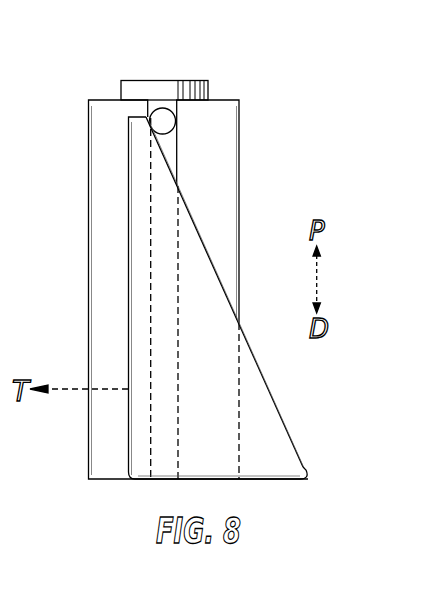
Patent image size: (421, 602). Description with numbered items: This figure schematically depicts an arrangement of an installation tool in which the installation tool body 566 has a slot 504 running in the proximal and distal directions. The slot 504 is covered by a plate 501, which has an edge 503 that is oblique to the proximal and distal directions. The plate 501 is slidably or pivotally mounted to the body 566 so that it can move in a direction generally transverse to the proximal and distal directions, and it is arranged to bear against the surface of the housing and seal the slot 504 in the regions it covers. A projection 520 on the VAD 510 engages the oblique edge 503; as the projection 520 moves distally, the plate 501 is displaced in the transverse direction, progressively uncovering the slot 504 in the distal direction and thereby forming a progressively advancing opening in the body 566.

The VAD 510 is at (145, 80).
The projection 520 is at (162, 108).
The slot 504 is at (167, 145).
The installation tool body 566 is at (215, 177).
The edge 503 is at (193, 223).
The plate 501 is at (213, 380).